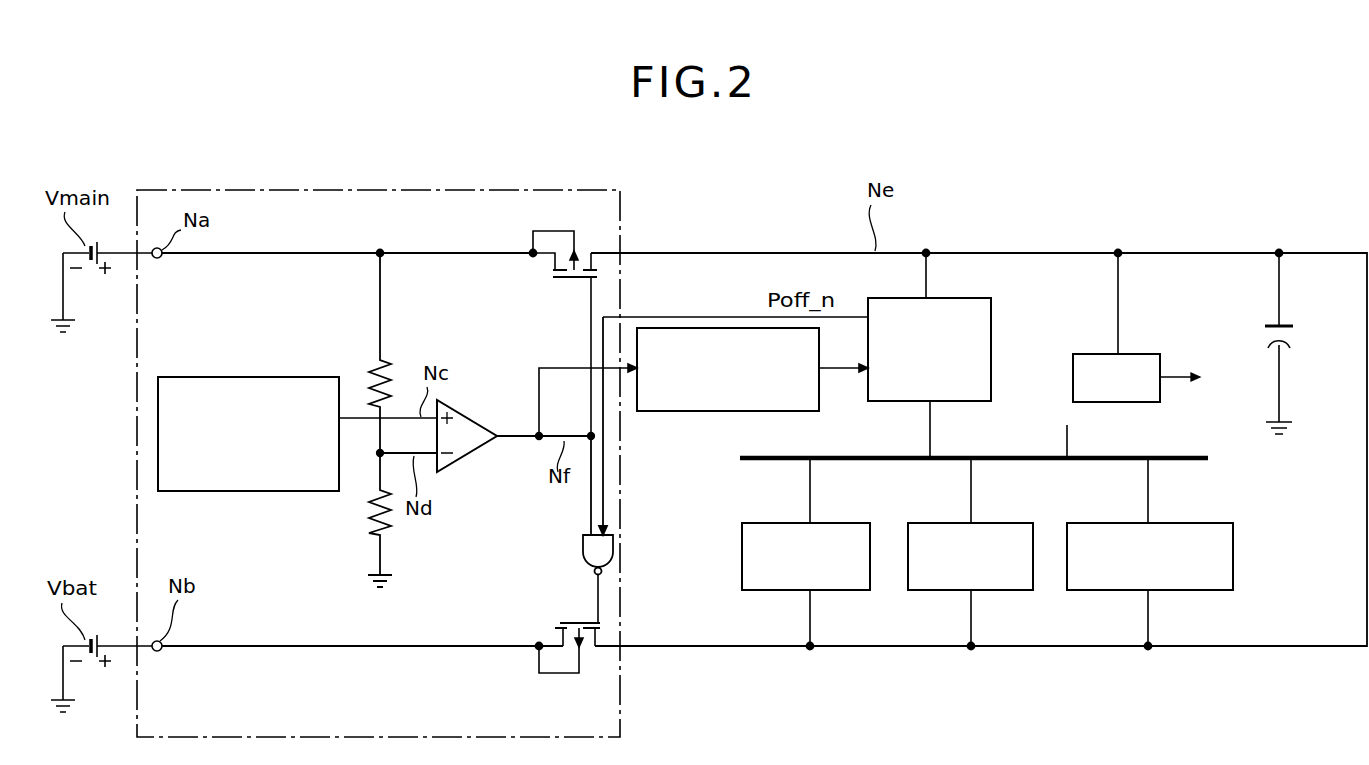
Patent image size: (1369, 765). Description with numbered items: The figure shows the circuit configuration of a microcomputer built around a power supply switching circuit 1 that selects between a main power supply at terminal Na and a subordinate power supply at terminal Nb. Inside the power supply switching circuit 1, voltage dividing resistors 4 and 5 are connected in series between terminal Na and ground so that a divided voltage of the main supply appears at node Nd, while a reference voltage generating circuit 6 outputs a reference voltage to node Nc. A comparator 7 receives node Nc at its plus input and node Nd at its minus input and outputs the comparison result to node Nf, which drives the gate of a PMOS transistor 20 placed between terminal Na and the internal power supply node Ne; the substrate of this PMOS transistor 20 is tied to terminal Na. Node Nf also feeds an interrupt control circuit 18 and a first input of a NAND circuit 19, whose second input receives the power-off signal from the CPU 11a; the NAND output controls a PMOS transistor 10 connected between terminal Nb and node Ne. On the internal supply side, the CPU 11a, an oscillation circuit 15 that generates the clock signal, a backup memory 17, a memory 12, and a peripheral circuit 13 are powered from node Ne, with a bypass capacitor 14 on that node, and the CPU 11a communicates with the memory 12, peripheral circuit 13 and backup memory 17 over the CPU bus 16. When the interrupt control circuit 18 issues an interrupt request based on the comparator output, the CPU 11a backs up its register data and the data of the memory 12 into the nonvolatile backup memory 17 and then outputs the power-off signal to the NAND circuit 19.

The power supply switching circuit 1 is at (396, 190).
The voltage dividing resistor 4 is at (392, 370).
The voltage dividing resistor 5 is at (364, 512).
The reference voltage generating circuit 6 is at (256, 377).
The comparator 7 is at (476, 457).
The PMOS transistor 10 is at (574, 620).
The CPU 11a is at (992, 332).
The memory 12 is at (994, 522).
The peripheral circuit 13 is at (1194, 522).
The bypass capacitor 14 is at (1294, 329).
The oscillation circuit 15 is at (1140, 353).
The CPU bus 16 is at (1175, 457).
The backup memory 17 is at (838, 522).
The interrupt control circuit 18 is at (696, 412).
The NAND circuit 19 is at (579, 548).
The PMOS transistor 20 is at (567, 284).